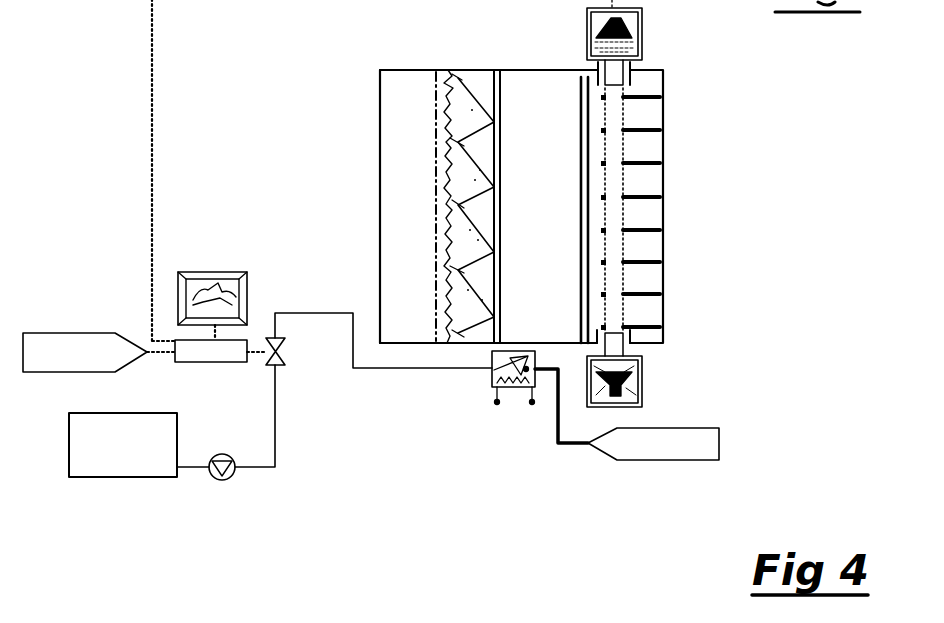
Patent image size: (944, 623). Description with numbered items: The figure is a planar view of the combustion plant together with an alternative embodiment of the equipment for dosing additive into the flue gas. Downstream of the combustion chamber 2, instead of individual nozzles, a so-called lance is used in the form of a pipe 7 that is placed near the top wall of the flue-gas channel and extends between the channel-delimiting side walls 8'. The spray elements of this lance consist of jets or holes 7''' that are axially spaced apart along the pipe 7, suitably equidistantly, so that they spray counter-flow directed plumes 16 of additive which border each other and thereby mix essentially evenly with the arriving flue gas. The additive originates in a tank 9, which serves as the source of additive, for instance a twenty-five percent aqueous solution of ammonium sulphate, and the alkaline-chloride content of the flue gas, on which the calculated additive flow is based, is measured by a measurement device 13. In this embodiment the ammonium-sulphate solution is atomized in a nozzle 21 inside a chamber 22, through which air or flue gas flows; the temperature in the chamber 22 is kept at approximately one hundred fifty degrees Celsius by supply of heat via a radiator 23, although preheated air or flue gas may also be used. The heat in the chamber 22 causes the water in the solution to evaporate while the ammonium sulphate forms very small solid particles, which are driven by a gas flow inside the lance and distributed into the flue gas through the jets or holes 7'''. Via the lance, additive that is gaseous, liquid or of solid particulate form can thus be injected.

The combustion chamber 2 is at (393, 205).
The pipe 7 is at (516, 208).
The jets or holes 7''' is at (524, 208).
The side walls 8' is at (407, 227).
The tank 9 is at (121, 478).
The measurement device 13 is at (642, 380).
The plumes 16 is at (462, 100).
The nozzle 21 is at (492, 367).
The chamber 22 is at (515, 387).
The radiator 23 is at (497, 404).